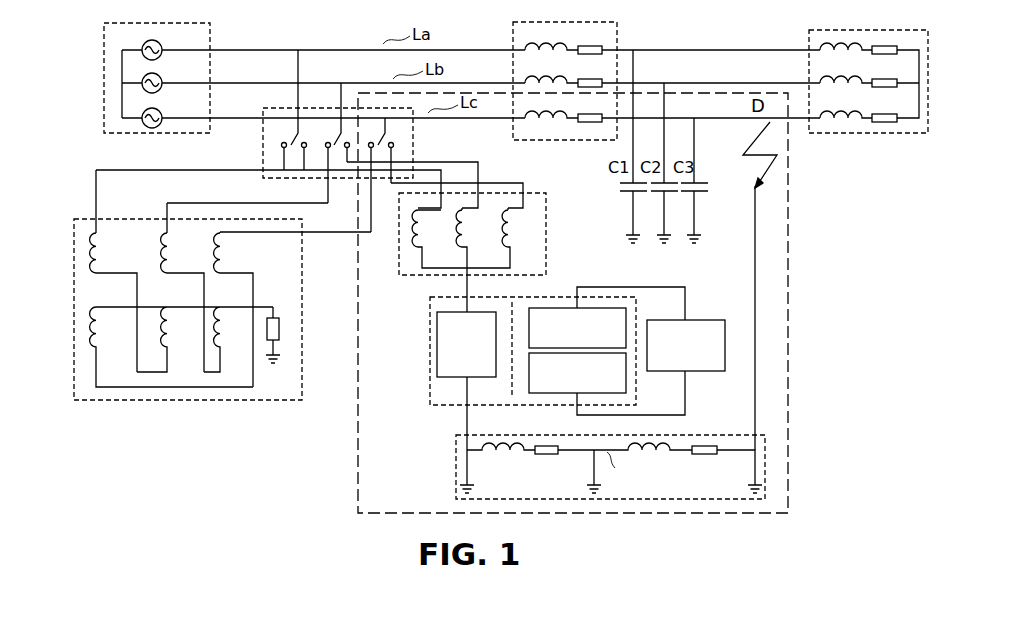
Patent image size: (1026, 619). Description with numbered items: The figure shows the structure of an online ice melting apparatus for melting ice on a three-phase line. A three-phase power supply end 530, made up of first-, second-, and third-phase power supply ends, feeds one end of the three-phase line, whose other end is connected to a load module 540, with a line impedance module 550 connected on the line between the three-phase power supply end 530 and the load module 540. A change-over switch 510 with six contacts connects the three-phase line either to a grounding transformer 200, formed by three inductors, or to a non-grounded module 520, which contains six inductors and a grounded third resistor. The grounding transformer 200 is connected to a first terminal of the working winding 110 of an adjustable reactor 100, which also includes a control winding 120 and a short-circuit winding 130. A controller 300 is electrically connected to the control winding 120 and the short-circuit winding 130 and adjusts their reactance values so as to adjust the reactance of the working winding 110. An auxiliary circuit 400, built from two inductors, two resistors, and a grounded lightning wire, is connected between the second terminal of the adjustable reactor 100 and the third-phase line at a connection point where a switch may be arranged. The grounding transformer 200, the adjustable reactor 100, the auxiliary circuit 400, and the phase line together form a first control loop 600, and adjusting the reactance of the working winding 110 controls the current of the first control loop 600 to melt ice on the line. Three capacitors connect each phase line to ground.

The adjustable reactor 100 is at (430, 380).
The working winding 110 is at (437, 343).
The control winding 120 is at (593, 306).
The short-circuit winding 130 is at (626, 372).
The grounding transformer 200 is at (548, 228).
The controller 300 is at (688, 318).
The auxiliary circuit 400 is at (767, 462).
The change-over switch 510 is at (413, 148).
The non-grounded module 520 is at (74, 322).
The three-phase power supply end 530 is at (163, 23).
The load module 540 is at (870, 30).
The line impedance module 550 is at (560, 22).
The first control loop 600 is at (790, 243).